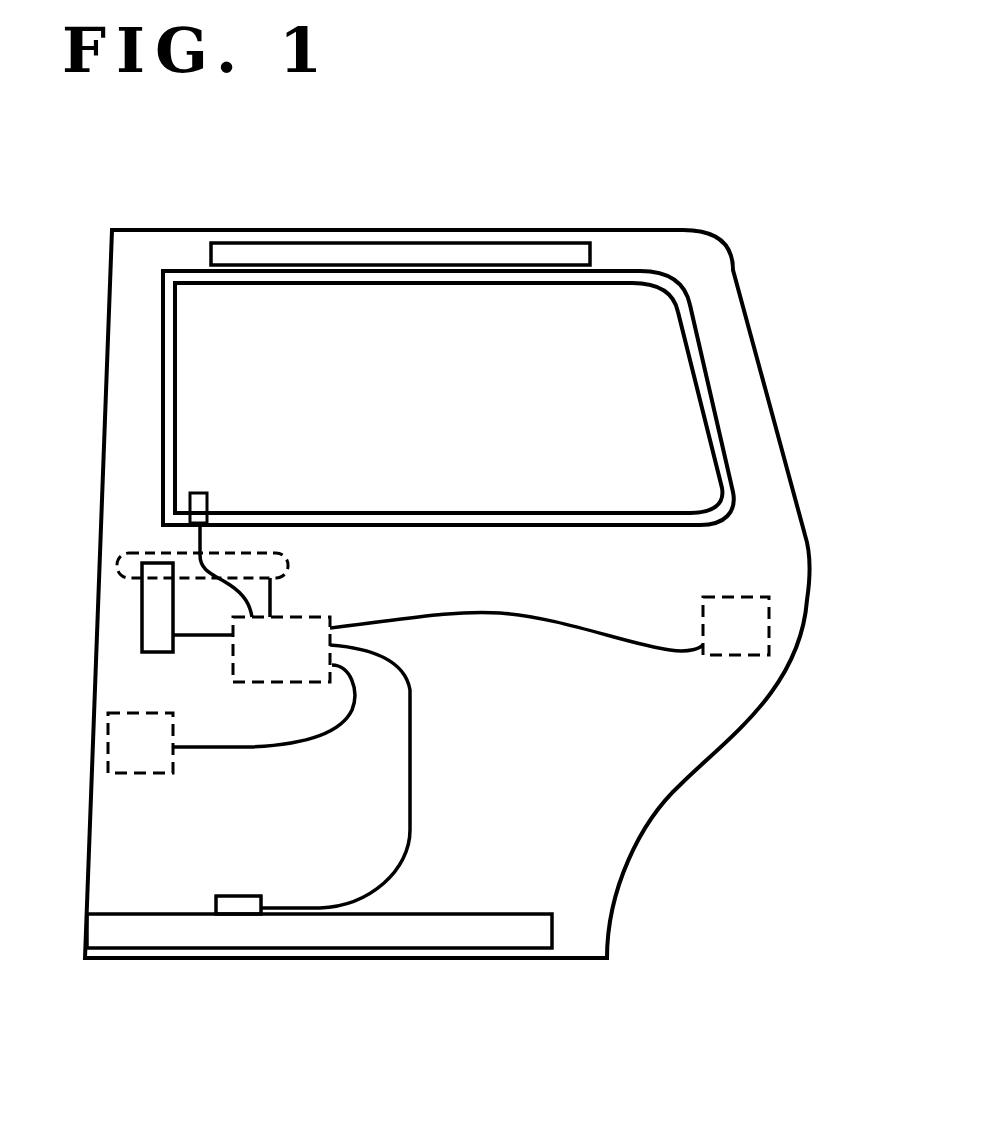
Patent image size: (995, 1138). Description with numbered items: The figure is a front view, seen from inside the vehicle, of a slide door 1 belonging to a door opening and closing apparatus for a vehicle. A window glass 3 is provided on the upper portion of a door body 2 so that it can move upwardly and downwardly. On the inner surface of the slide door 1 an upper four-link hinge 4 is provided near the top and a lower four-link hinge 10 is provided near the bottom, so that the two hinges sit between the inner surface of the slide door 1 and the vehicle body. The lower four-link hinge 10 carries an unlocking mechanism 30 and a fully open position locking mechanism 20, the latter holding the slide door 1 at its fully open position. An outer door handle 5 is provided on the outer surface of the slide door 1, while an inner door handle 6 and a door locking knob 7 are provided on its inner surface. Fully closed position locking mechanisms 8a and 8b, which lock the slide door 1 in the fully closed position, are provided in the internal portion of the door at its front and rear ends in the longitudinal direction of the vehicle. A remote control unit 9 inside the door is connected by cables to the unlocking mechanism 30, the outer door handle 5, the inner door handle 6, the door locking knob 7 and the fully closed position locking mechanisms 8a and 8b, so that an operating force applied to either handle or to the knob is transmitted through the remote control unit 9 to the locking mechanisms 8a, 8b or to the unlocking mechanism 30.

The slide door 1 is at (835, 197).
The door body 2 is at (650, 763).
The window glass 3 is at (642, 352).
The four-link hinge 4 is at (453, 250).
The outer door handle 5 is at (125, 553).
The inner door handle 6 is at (142, 618).
The door locking knob 7 is at (192, 500).
The fully closed position locking mechanism 8a is at (108, 747).
The fully closed position locking mechanism 8b is at (769, 630).
The remote control unit 9 is at (233, 665).
The four-link hinge 10 is at (378, 935).
The fully open position locking mechanism 20 is at (238, 905).
The unlocking mechanism 30 is at (238, 908).